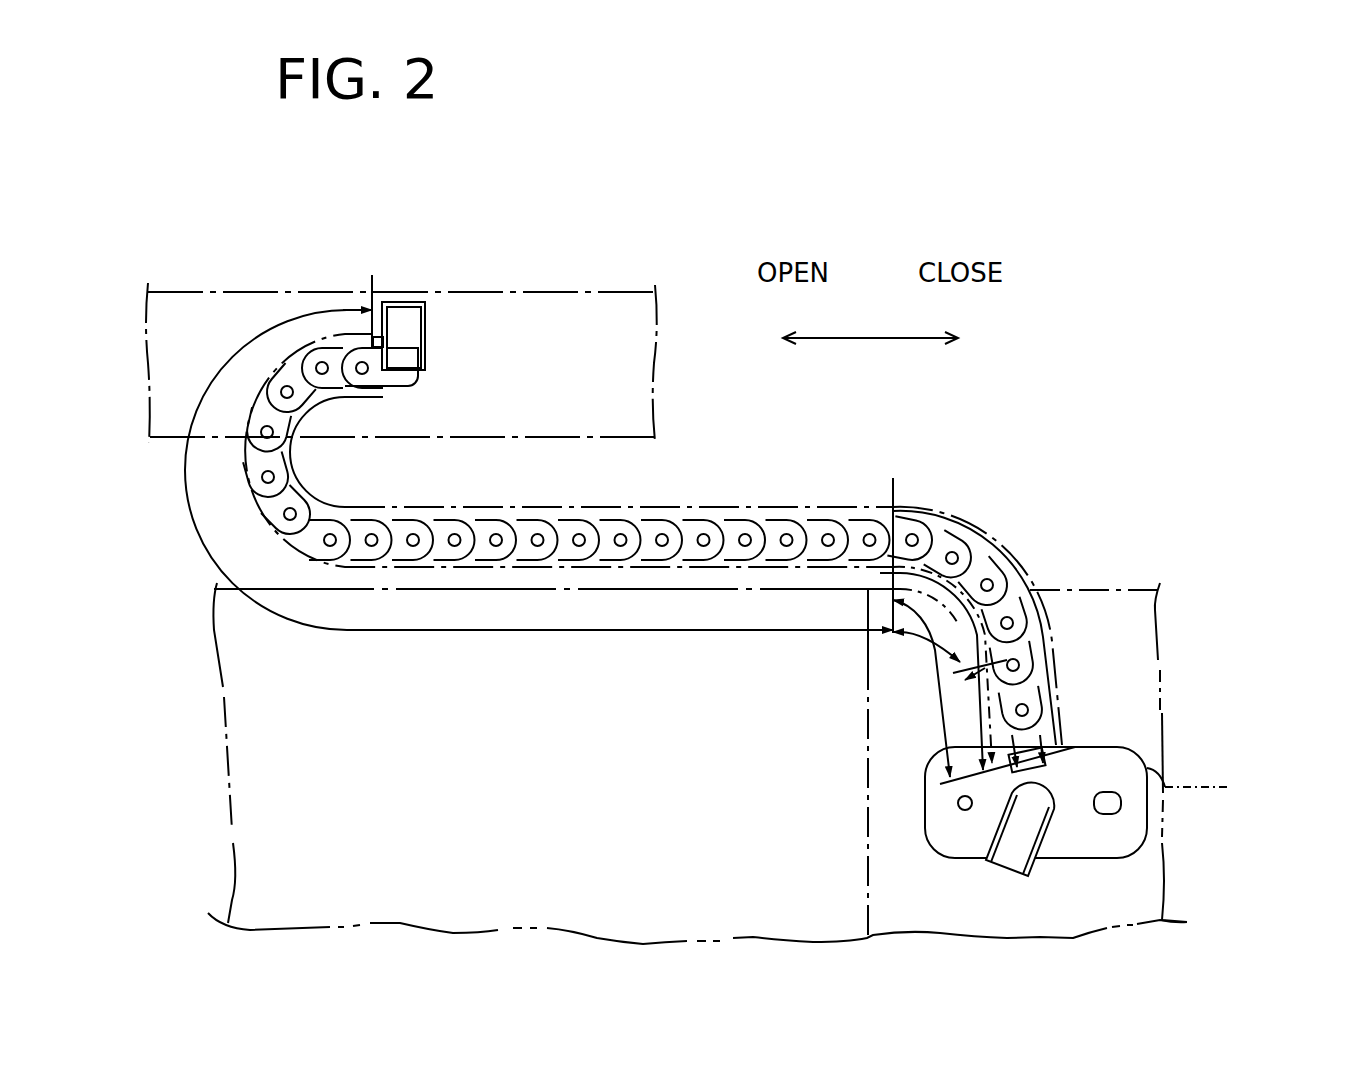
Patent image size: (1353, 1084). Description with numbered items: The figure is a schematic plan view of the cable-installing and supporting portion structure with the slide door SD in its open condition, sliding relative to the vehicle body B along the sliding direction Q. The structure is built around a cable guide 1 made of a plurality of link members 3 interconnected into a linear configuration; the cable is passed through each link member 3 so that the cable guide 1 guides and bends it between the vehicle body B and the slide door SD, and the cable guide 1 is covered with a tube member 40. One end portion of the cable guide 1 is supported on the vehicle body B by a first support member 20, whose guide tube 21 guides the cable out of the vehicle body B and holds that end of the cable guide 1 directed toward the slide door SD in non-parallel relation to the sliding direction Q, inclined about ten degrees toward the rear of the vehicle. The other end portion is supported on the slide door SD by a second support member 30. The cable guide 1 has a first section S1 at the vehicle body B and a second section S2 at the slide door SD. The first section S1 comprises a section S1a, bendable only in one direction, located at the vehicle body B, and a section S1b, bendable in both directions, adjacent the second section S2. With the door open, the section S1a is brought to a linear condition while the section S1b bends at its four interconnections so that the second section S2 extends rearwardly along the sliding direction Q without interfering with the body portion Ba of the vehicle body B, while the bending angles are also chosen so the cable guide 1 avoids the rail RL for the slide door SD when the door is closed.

The cable guide 1 is at (642, 538).
The link member 3 is at (525, 526).
The first support member 20 is at (1078, 838).
The guide tube 21 is at (1050, 757).
The second support member 30 is at (432, 372).
The tube member 40 is at (845, 505).
The slide door SD is at (523, 292).
The vehicle body B is at (1163, 744).
The body portion Ba is at (767, 593).
The rail RL is at (1209, 787).
The first section S1 is at (943, 668).
The section bendable only in one direction S1a is at (985, 747).
The section bendable in both directions S1b is at (868, 650).
The second section S2 is at (526, 492).
The sliding direction Q is at (870, 321).